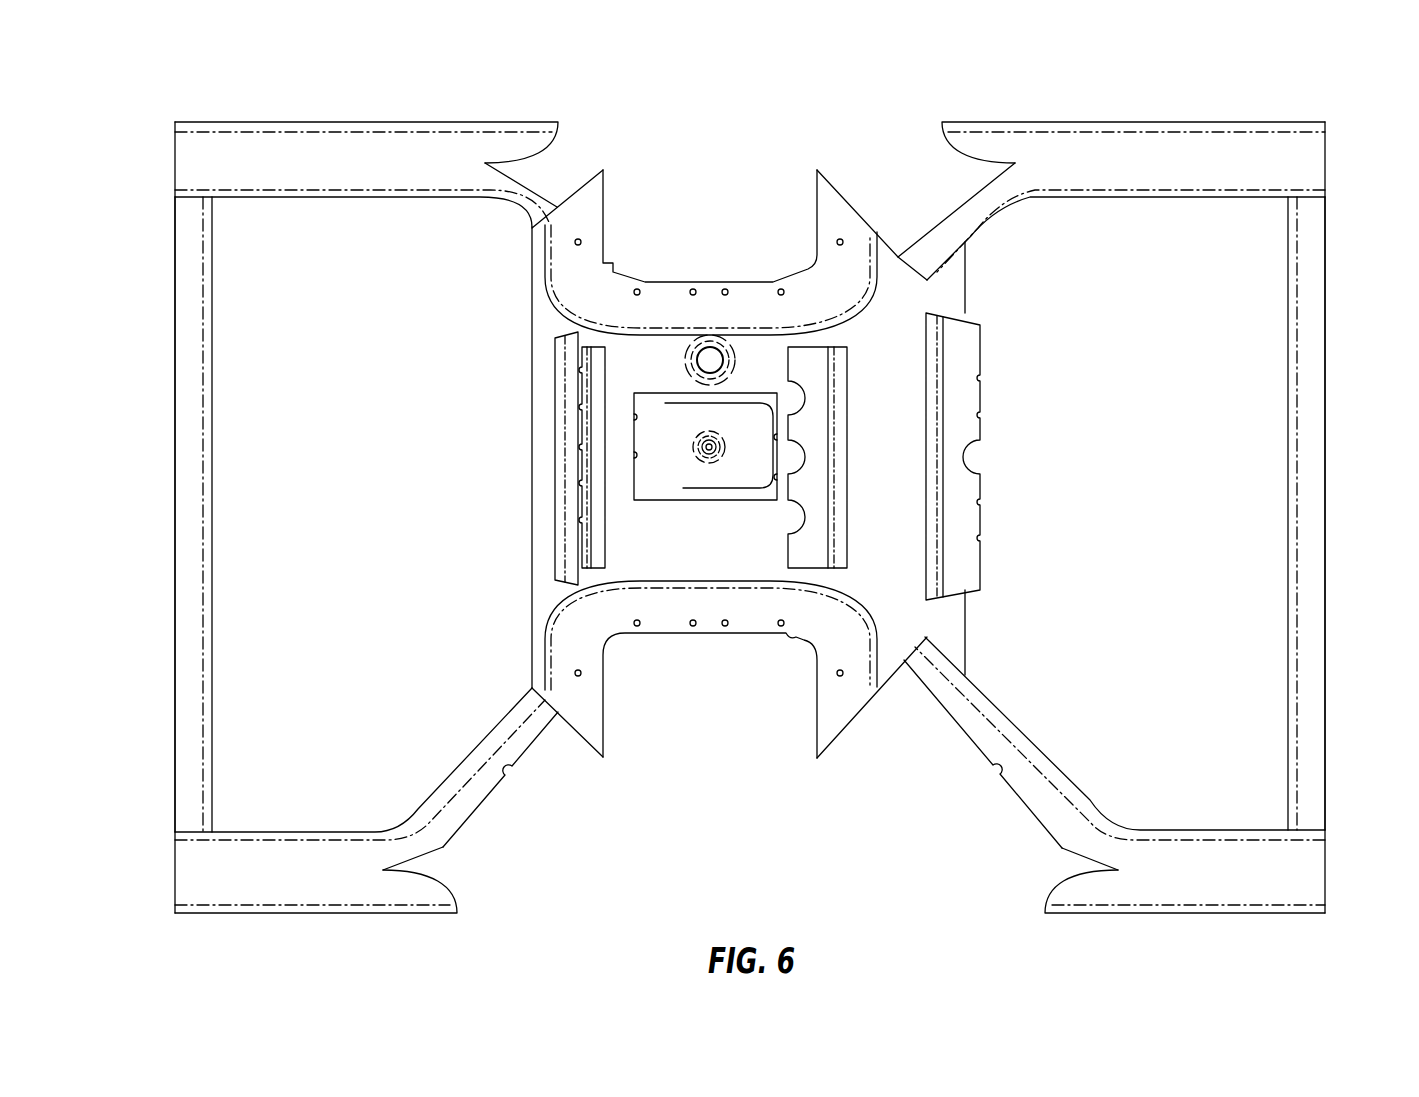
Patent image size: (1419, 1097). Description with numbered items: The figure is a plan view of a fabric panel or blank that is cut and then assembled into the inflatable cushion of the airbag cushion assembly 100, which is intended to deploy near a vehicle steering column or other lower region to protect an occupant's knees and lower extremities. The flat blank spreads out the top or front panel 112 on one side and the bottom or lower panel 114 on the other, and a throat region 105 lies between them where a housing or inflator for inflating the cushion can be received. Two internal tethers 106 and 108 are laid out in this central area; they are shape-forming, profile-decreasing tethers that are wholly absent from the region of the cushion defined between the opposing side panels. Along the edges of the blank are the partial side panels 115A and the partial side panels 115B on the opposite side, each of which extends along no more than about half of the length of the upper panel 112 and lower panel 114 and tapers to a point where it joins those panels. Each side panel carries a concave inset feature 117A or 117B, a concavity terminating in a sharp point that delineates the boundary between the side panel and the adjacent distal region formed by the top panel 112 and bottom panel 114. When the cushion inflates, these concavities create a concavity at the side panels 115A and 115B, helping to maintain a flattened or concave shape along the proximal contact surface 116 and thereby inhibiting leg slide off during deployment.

The airbag cushion assembly 100 is at (1152, 104).
The throat region 105 is at (760, 198).
The internal tether 106 is at (818, 558).
The internal tether 108 is at (962, 585).
The top panel 112 is at (277, 388).
The bottom panel 114 is at (1225, 385).
The side panel 115A is at (347, 148).
The side panel 115B is at (347, 886).
The proximal contact surface 116 is at (175, 519).
The concave inset feature 117A is at (545, 155).
The concave inset feature 117B is at (438, 871).